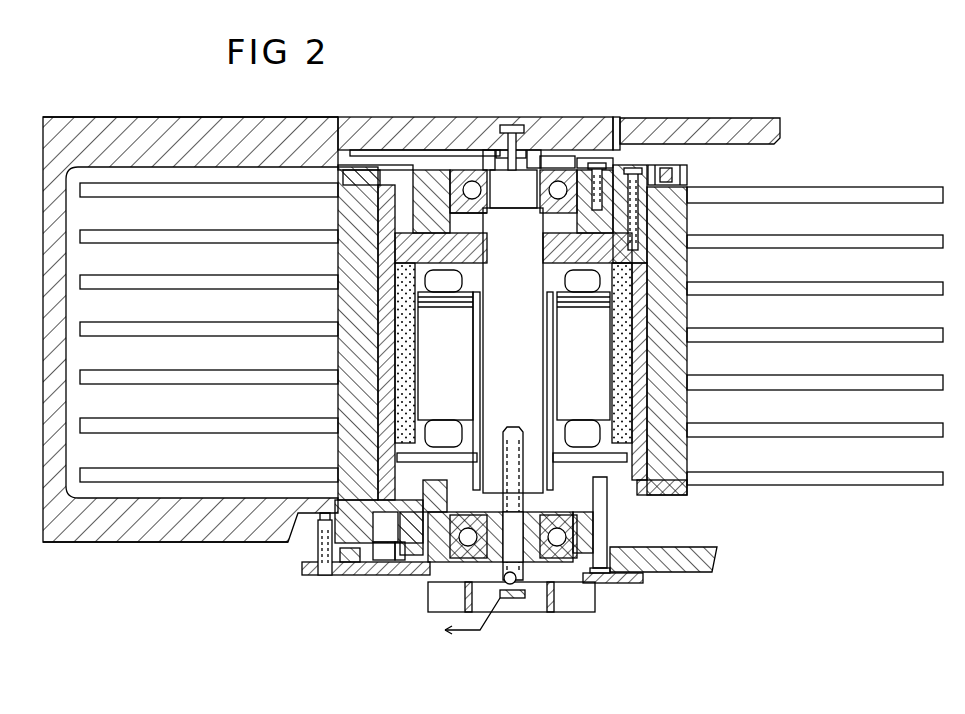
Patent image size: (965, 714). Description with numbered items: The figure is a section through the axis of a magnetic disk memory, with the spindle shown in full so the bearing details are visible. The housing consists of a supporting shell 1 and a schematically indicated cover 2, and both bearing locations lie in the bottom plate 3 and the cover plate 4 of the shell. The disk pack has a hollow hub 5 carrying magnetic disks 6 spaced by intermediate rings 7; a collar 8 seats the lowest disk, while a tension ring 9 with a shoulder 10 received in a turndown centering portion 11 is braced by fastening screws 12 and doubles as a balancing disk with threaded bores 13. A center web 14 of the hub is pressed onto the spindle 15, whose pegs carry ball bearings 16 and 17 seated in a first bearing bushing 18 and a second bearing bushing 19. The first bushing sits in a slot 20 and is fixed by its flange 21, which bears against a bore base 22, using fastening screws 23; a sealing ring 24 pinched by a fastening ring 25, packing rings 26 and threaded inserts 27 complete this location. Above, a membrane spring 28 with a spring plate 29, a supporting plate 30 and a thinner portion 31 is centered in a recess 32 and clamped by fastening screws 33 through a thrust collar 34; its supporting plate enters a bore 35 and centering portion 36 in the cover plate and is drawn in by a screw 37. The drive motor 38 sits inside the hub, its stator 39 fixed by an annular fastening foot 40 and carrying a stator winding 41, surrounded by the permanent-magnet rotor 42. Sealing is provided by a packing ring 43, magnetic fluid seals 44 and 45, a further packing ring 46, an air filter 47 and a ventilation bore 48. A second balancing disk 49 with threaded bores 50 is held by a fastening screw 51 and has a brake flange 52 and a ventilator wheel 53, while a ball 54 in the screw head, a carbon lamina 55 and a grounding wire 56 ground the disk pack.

The supporting shell 1 is at (112, 116).
The cover 2 is at (745, 132).
The bottom plate 3 is at (108, 542).
The cover plate 4 is at (140, 122).
The hub 5 is at (345, 393).
The magnetic disks 6 is at (283, 340).
The intermediate rings 7 is at (352, 320).
The collar 8 is at (352, 508).
The tension ring 9 is at (332, 118).
The shoulder 10 is at (360, 172).
The turndown centering portion 11 is at (372, 185).
The fastening screws 12 is at (660, 208).
The threaded bores 13 is at (690, 178).
The center web 14 is at (655, 260).
The spindle 15 is at (548, 322).
The ball bearing 16 is at (600, 530).
The ball bearing 17 is at (538, 176).
The first bearing bushing 18 is at (655, 550).
The second bearing bushing 19 is at (665, 168).
The slot 20 is at (430, 505).
The flange 21 is at (355, 585).
The bore base 22 is at (415, 570).
The fastening screws 23 is at (380, 575).
The sealing ring 24 is at (330, 575).
The fastening ring 25 is at (303, 568).
The packing rings 26 is at (398, 562).
The threaded inserts 27 is at (378, 520).
The membrane spring 28 is at (612, 165).
The spring plate 29 is at (512, 195).
The supporting plate 30 is at (590, 168).
The turned down thinner portion 31 is at (604, 160).
The concentric recess 32 is at (420, 175).
The fastening screws 33 is at (460, 178).
The thrust collar 34 is at (432, 175).
The bore 35 is at (490, 160).
The turn-down centering portion 36 is at (560, 160).
The screw 37 is at (508, 150).
The drive motor 38 is at (560, 355).
The stator 39 is at (550, 404).
The annular fastening foot 40 is at (660, 470).
The stator winding 41 is at (668, 352).
The rotor 42 is at (622, 360).
The packing ring 43 is at (540, 158).
The magnetic fluid seal 44 is at (630, 470).
The magnetic fluid seal 45 is at (455, 233).
The packing ring 46 is at (452, 176).
The air filter 47 is at (362, 152).
The ventilation bore 48 is at (518, 128).
The second balancing disk 49 is at (610, 583).
The threaded bores 50 is at (588, 612).
The fastening screw 51 is at (500, 470).
The flange 52 is at (647, 583).
The ventilator wheel 53 is at (572, 612).
The ball 54 is at (508, 586).
The carbon lamina 55 is at (522, 598).
The grounding wire 56 is at (486, 630).